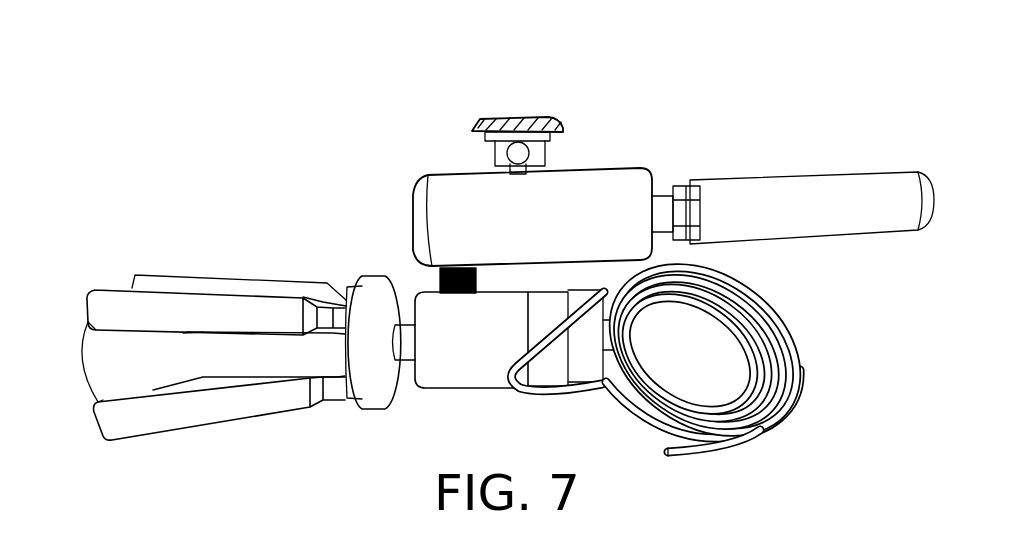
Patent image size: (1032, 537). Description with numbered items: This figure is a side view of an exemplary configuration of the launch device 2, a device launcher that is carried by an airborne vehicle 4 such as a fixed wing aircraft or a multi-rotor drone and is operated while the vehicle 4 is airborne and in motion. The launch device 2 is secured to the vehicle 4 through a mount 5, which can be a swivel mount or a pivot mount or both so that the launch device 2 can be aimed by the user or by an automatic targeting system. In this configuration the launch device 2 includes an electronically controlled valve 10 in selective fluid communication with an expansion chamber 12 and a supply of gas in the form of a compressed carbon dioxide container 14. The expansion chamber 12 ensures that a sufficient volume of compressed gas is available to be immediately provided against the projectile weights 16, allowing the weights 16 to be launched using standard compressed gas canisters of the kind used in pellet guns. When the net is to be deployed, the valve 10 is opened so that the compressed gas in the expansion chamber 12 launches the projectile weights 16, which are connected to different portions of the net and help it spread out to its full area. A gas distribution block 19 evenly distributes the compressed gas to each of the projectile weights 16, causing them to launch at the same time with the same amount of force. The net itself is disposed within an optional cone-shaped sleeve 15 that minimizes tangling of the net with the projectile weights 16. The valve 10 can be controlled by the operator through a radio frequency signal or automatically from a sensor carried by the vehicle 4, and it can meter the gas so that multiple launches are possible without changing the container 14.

The launch device 2 is at (466, 100).
The airborne vehicle 4 is at (528, 118).
The mount 5 is at (502, 162).
The expansion chamber 12 is at (603, 206).
The compressed carbon dioxide container 14 is at (873, 198).
The electronically controlled valve 10 is at (475, 375).
The gas distribution block 19 is at (370, 400).
The projectile weights 16 is at (178, 312).
The cone-shaped sleeve 15 is at (86, 360).